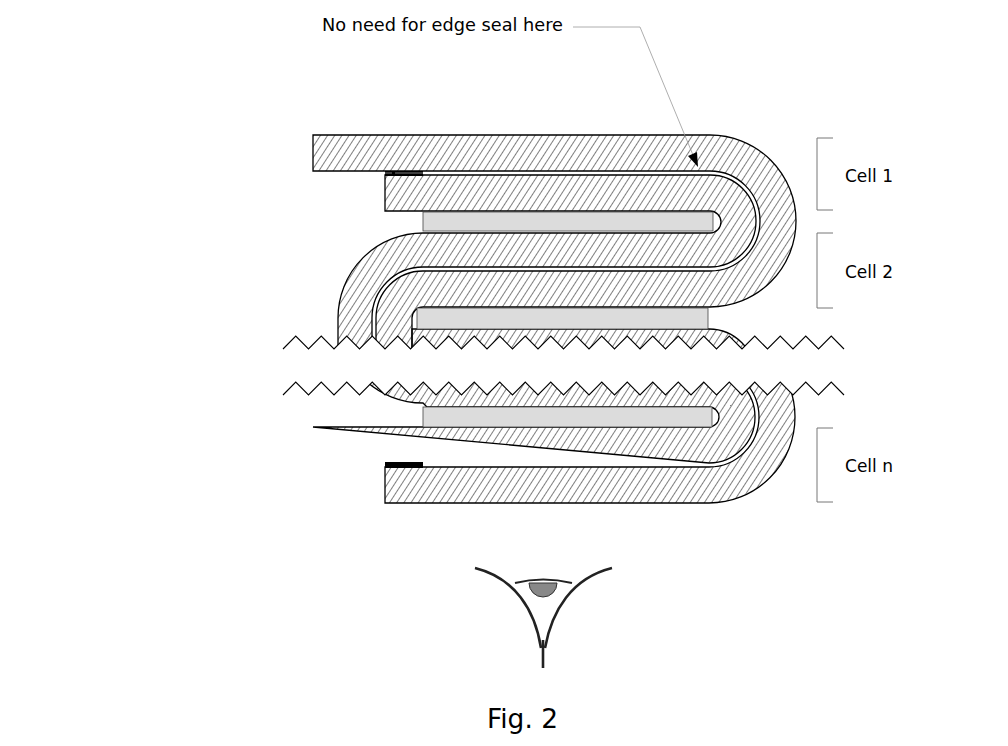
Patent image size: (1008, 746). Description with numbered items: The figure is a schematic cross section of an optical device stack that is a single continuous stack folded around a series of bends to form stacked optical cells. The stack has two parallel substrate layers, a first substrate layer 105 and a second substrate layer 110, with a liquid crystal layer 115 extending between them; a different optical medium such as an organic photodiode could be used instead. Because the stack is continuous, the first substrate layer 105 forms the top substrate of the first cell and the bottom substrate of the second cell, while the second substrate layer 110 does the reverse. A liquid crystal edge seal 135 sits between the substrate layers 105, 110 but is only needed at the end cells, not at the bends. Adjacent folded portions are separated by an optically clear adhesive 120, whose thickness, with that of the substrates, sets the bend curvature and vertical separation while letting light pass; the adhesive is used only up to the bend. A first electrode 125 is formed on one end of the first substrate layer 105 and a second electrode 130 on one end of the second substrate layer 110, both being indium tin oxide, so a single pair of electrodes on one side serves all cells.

The first substrate layer 105 is at (300, 153).
The second substrate layer 110 is at (348, 418).
The liquid crystal layer 115 is at (529, 159).
The optically clear adhesive 120 is at (410, 227).
The first electrode 125 is at (334, 179).
The second electrode 130 is at (339, 470).
The liquid crystal edge seal 135 is at (392, 160).